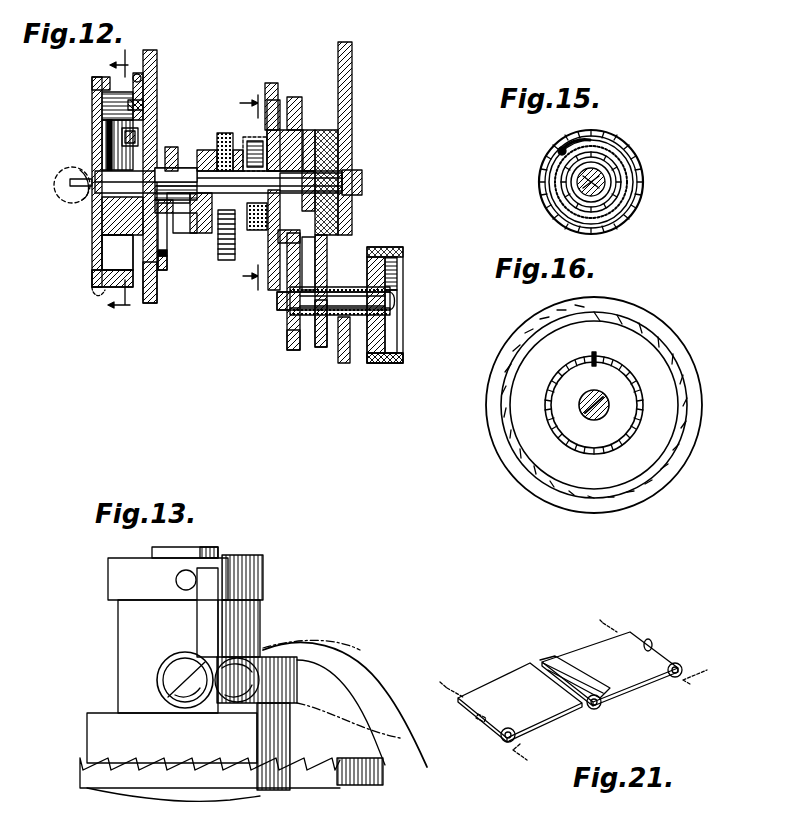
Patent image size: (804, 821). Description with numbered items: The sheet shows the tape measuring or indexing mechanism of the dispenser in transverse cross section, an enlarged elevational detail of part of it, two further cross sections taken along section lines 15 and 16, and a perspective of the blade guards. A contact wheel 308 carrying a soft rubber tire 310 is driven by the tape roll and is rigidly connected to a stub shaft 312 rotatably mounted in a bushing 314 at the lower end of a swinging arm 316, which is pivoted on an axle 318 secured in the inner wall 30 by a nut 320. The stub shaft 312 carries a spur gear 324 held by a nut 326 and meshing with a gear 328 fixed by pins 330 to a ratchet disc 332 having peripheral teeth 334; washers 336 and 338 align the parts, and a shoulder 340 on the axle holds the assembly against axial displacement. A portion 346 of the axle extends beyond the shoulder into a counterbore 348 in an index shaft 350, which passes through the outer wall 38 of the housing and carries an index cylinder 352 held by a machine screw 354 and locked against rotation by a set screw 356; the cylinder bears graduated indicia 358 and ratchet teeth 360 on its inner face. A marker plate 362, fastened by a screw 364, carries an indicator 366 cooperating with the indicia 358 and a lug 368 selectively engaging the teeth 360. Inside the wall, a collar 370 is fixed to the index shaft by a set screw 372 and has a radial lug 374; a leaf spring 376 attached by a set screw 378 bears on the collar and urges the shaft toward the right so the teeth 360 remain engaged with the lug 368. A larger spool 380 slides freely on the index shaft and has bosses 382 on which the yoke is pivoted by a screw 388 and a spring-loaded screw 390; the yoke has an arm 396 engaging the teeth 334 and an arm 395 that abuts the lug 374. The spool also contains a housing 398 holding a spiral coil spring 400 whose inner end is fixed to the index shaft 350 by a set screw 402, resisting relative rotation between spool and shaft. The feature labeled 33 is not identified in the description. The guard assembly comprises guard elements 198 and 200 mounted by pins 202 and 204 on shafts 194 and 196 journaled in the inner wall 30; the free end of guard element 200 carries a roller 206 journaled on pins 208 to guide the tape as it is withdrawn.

In FIG. 12, the outer wall 38 is at (157, 52).
In FIG. 12, the frame wall 33 is at (150, 303).
In FIG. 12, the inner wall 30 is at (352, 58).
In FIG. 12, the set screw 356 is at (92, 132).
In FIG. 12, the indicator 366 is at (110, 92).
In FIG. 12, the marker plate 362 is at (143, 88).
In FIG. 12, the screw 364 is at (143, 105).
In FIG. 12, the lug 368 is at (138, 137).
In FIG. 16, the lug 368 is at (590, 354).
In FIG. 12, the ratchet teeth 360 is at (125, 213).
In FIG. 16, the ratchet teeth 360 is at (588, 454).
In FIG. 12, the spool 380 is at (225, 182).
In FIG. 13, the spool 380 is at (118, 618).
In FIG. 12, the shoulder 340 is at (280, 182).
In FIG. 12, the nut 320 is at (362, 180).
In FIG. 12, the set screw 372 is at (176, 184).
In FIG. 12, the projecting portion of the axle 346 is at (171, 147).
In FIG. 15, the projecting portion of the axle 346 is at (566, 195).
In FIG. 12, the index shaft 350 is at (233, 158).
In FIG. 15, the index shaft 350 is at (575, 176).
In FIG. 16, the index shaft 350 is at (608, 400).
In FIG. 13, the index shaft 350 is at (214, 547).
In FIG. 12, the bosses 382 is at (207, 150).
In FIG. 12, the screw 388 is at (222, 133).
In FIG. 12, the spiral coil spring 400 is at (253, 144).
In FIG. 15, the spiral coil spring 400 is at (627, 172).
In FIG. 12, the set screw 402 is at (280, 140).
In FIG. 15, the set screw 402 is at (600, 143).
In FIG. 12, the ratchet disc 332 is at (270, 83).
In FIG. 13, the ratchet disc 332 is at (345, 785).
In FIG. 12, the gear 328 is at (292, 97).
In FIG. 12, the pins 330 is at (308, 130).
In FIG. 12, the washer 336 is at (316, 165).
In FIG. 12, the washer 338 is at (338, 138).
In FIG. 12, the axle 318 is at (352, 165).
In FIG. 12, the index cylinder 352 is at (115, 247).
In FIG. 16, the index cylinder 352 is at (652, 495).
In FIG. 12, the collar 370 is at (117, 252).
In FIG. 13, the collar 370 is at (108, 570).
In FIG. 12, the indicia 358 is at (110, 287).
In FIG. 16, the indicia 358 is at (665, 342).
In FIG. 12, the machine screw 354 is at (68, 203).
In FIG. 16, the machine screw 354 is at (590, 410).
In FIG. 12, the counterbore 348 is at (185, 233).
In FIG. 12, the radial lug 374 is at (205, 233).
In FIG. 13, the radial lug 374 is at (176, 580).
In FIG. 12, the arm 395 is at (218, 240).
In FIG. 13, the arm 395 is at (197, 610).
In FIG. 12, the screw 390 is at (228, 260).
In FIG. 13, the screw 390 is at (172, 672).
In FIG. 12, the housing 398 is at (257, 230).
In FIG. 15, the housing 398 is at (626, 214).
In FIG. 13, the housing 398 is at (87, 729).
In FIG. 12, the leaf spring 376 is at (157, 293).
In FIG. 12, the set screw 378 is at (165, 270).
In FIG. 12, the stub shaft 312 is at (287, 330).
In FIG. 12, the spur gear 324 is at (290, 345).
In FIG. 12, the nut 326 is at (302, 300).
In FIG. 12, the bushing 314 is at (320, 347).
In FIG. 12, the swinging arm 316 is at (340, 363).
In FIG. 12, the teeth 334 is at (277, 300).
In FIG. 13, the teeth 334 is at (80, 767).
In FIG. 12, the contact wheel 308 is at (397, 322).
In FIG. 12, the tire 310 is at (383, 363).
In FIG. 12, the section line 16 is at (117, 186).
In FIG. 12, the section line 15 is at (249, 192).
In FIG. 13, the arm 396 is at (352, 672).
In FIG. 21, the guard element 198 is at (572, 722).
In FIG. 21, the shaft 194 is at (510, 758).
In FIG. 21, the pin 202 is at (478, 721).
In FIG. 21, the guard element 200 is at (648, 684).
In FIG. 21, the roller 206 is at (573, 668).
In FIG. 21, the pin 204 is at (653, 642).
In FIG. 21, the shaft 196 is at (700, 672).
In FIG. 21, the pins 208 is at (598, 708).